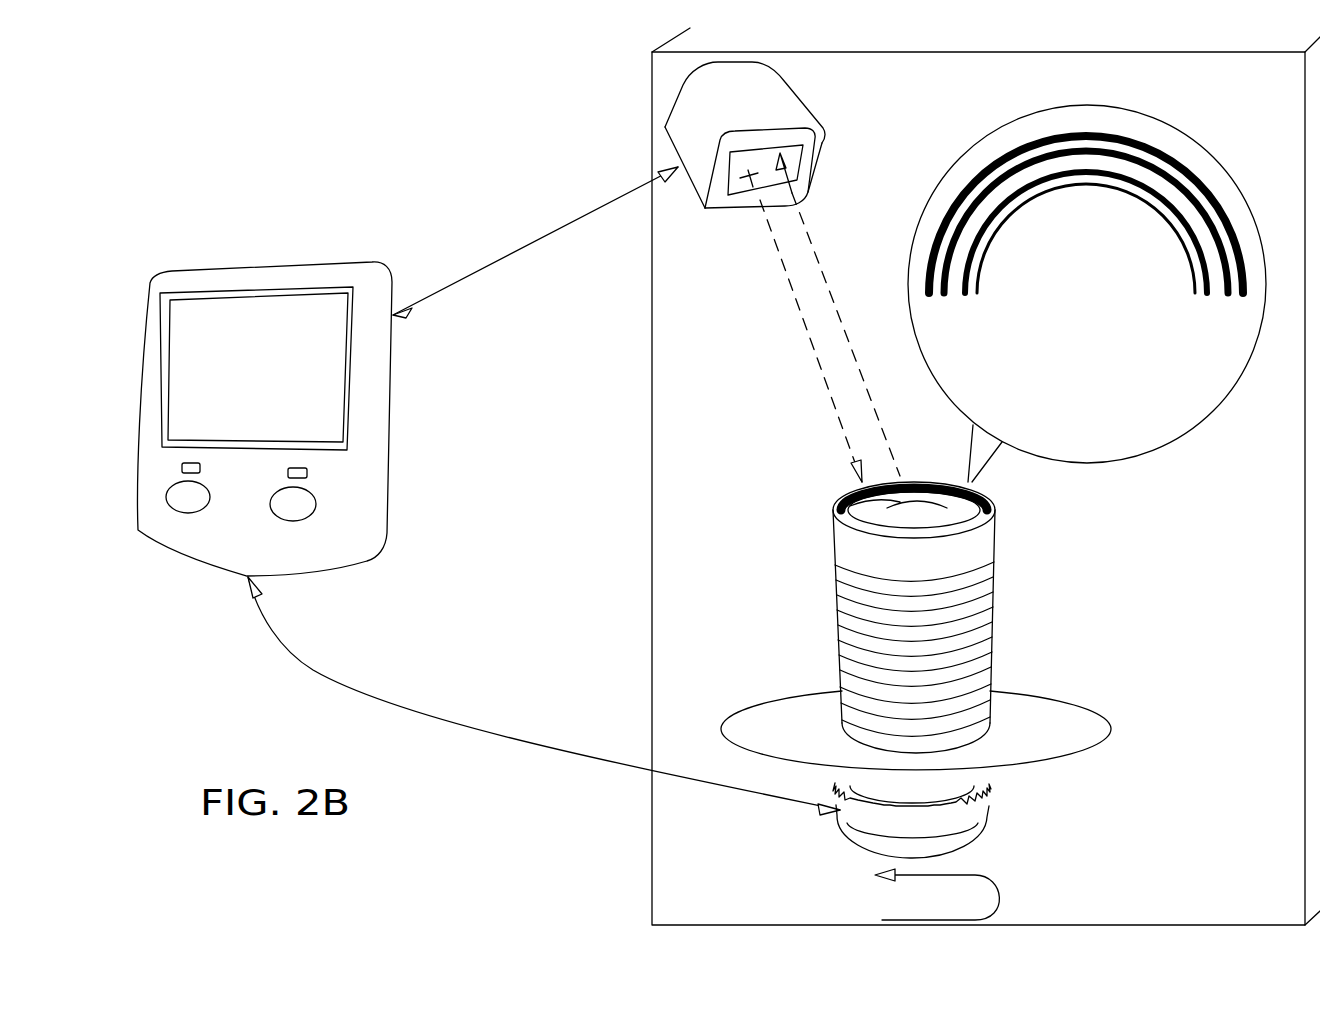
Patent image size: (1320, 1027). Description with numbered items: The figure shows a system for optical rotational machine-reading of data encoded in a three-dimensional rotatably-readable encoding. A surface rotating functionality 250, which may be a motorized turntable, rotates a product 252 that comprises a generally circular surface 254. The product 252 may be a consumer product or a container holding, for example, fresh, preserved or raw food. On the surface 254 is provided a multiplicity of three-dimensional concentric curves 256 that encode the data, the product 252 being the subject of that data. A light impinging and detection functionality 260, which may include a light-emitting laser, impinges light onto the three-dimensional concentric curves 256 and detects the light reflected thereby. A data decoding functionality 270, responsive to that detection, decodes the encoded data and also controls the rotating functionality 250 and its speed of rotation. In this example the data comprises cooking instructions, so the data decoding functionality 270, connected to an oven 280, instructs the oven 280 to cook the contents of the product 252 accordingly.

The oven 280 is at (652, 108).
The light impinging and detection functionality 260 is at (823, 130).
The three-dimensional concentric curves 256 is at (1087, 195).
The surface 254 is at (995, 506).
The product 252 is at (1030, 606).
The surface rotating functionality 250 is at (805, 842).
The data decoding functionality 270 is at (392, 357).